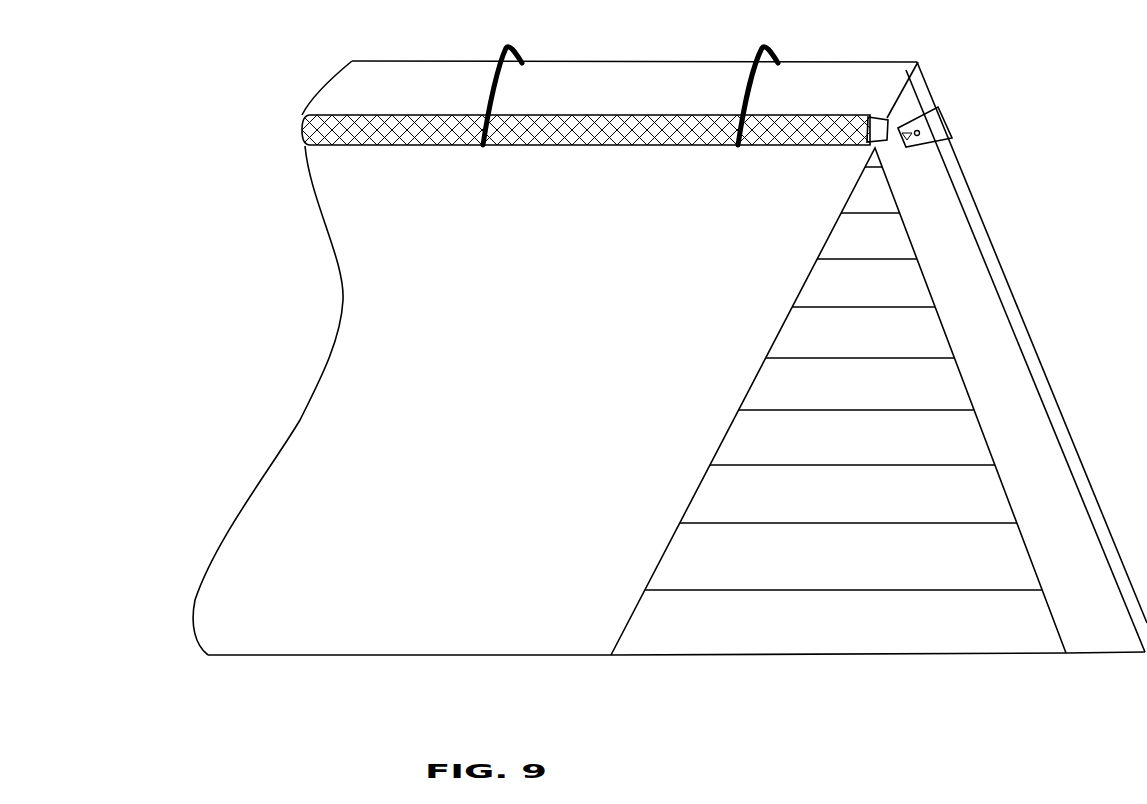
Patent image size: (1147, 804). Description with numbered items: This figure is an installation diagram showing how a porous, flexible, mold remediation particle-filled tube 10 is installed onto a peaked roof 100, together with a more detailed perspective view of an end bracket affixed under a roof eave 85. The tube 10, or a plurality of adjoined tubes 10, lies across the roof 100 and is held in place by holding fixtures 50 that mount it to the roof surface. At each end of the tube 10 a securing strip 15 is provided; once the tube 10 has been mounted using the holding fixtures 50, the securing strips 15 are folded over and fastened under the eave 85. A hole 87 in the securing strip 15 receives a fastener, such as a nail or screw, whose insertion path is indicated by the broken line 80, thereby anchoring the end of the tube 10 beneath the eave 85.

The tube 10 is at (603, 146).
The securing strip 15 is at (896, 90).
The holding fixture 50 is at (500, 92).
The broken line 80 is at (875, 150).
The eave 85 is at (974, 289).
The hole 87 is at (917, 136).
The roof 100 is at (497, 655).